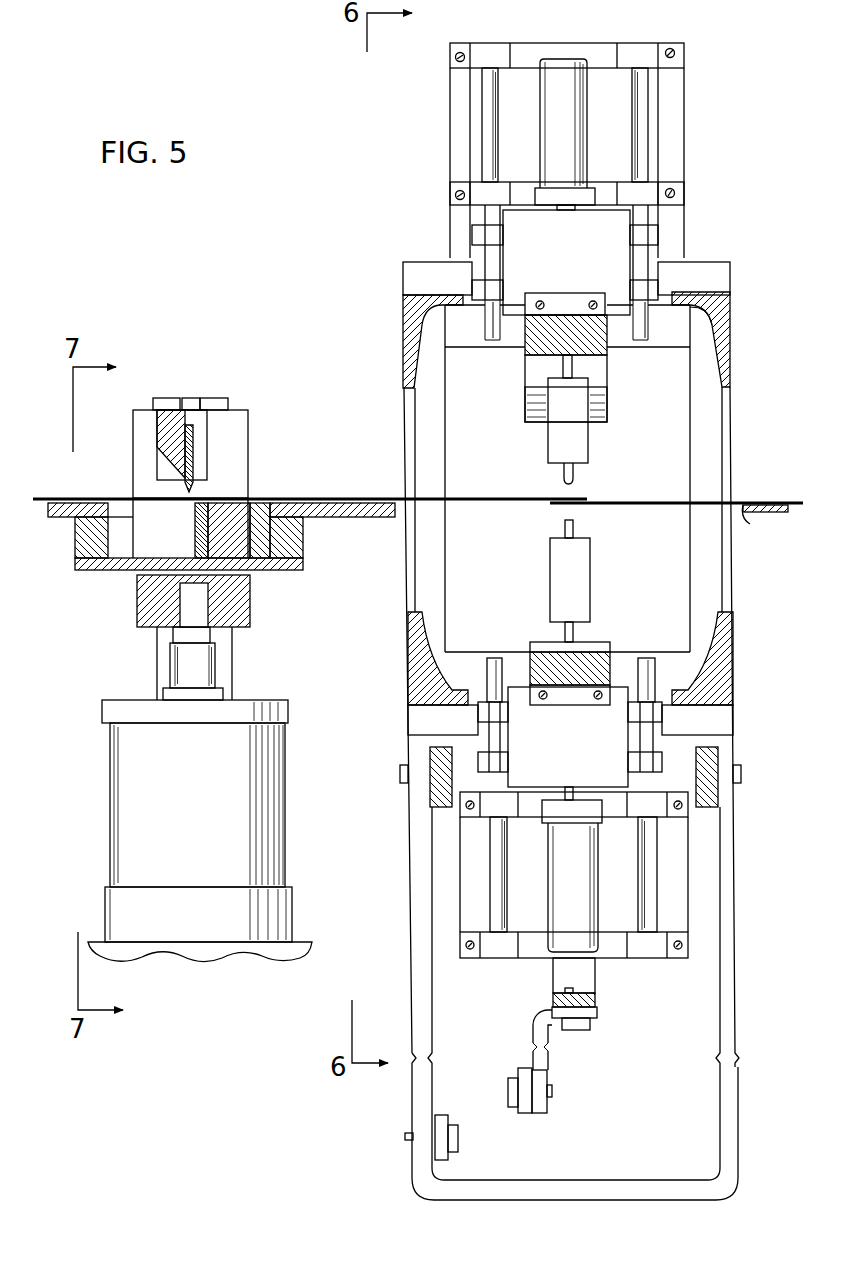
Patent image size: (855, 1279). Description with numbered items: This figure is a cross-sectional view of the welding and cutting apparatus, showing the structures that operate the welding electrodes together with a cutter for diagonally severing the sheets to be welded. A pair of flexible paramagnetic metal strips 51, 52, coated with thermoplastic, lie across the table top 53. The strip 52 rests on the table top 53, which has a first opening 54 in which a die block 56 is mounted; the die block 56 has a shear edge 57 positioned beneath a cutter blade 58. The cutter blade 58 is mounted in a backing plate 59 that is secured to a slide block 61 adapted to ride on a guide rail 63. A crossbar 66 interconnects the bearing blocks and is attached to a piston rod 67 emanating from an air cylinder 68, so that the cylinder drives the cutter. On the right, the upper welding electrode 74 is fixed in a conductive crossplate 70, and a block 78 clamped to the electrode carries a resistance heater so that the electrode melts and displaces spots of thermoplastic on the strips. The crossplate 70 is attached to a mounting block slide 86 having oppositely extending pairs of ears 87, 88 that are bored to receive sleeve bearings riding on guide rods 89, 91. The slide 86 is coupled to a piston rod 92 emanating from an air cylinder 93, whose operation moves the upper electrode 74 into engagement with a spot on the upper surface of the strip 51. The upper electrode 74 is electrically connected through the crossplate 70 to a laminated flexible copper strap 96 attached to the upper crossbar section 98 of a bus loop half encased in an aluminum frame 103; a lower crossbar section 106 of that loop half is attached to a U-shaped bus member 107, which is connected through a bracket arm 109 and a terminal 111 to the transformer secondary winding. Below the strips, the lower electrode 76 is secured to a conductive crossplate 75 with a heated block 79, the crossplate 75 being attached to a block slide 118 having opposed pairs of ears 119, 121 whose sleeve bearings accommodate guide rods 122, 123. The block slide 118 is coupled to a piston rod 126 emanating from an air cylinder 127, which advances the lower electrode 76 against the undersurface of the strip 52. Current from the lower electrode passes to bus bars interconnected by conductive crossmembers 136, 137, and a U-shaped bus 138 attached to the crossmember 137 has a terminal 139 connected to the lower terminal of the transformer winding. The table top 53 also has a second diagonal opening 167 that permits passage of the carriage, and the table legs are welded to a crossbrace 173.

The flexible strip 51 is at (500, 497).
The flexible strip 52 is at (620, 505).
The table top 53 is at (325, 512).
The first opening 54 is at (92, 535).
The die block 56 is at (195, 540).
The shear edge 57 is at (195, 507).
The cutter blade 58 is at (190, 472).
The backing plate 59 is at (160, 425).
The slide block 61 is at (240, 422).
The guide rail 63 is at (190, 402).
The crossbar 66 is at (250, 602).
The piston rod 67 is at (215, 657).
The air cylinder 68 is at (275, 787).
The crossplate 70 is at (530, 343).
The upper welding electrode 74 is at (573, 478).
The crossplate 75 is at (600, 648).
The lower welding electrode 76 is at (565, 525).
The block 78 is at (588, 442).
The block 79 is at (550, 560).
The mounting block slide 86 is at (510, 222).
The ears 87 is at (472, 283).
The ears 88 is at (658, 283).
The guide rod 89 is at (482, 150).
The guide rod 91 is at (648, 150).
The piston rod 92 is at (565, 210).
The air cylinder 93 is at (572, 60).
The laminated flexible copper strap 96 is at (607, 395).
The upper crossbar section 98 is at (690, 312).
The aluminum frame 103 is at (410, 300).
The lower crossbar section 106 is at (453, 690).
The U-shaped bus member 107 is at (553, 983).
The bracket arm 109 is at (533, 1032).
The terminal 111 is at (525, 1112).
The block slide 118 is at (520, 688).
The ears 119 is at (478, 757).
The ears 121 is at (662, 757).
The guide rod 122 is at (490, 890).
The guide rod 123 is at (657, 890).
The piston rod 126 is at (570, 790).
The air cylinder 127 is at (598, 950).
The conductive crossmember 136 is at (430, 782).
The conductive crossmember 137 is at (718, 782).
The U-shaped bus 138 is at (720, 1035).
The terminal 139 is at (440, 1115).
The second diagonal opening 167 is at (750, 522).
The crossbrace 173 is at (300, 947).